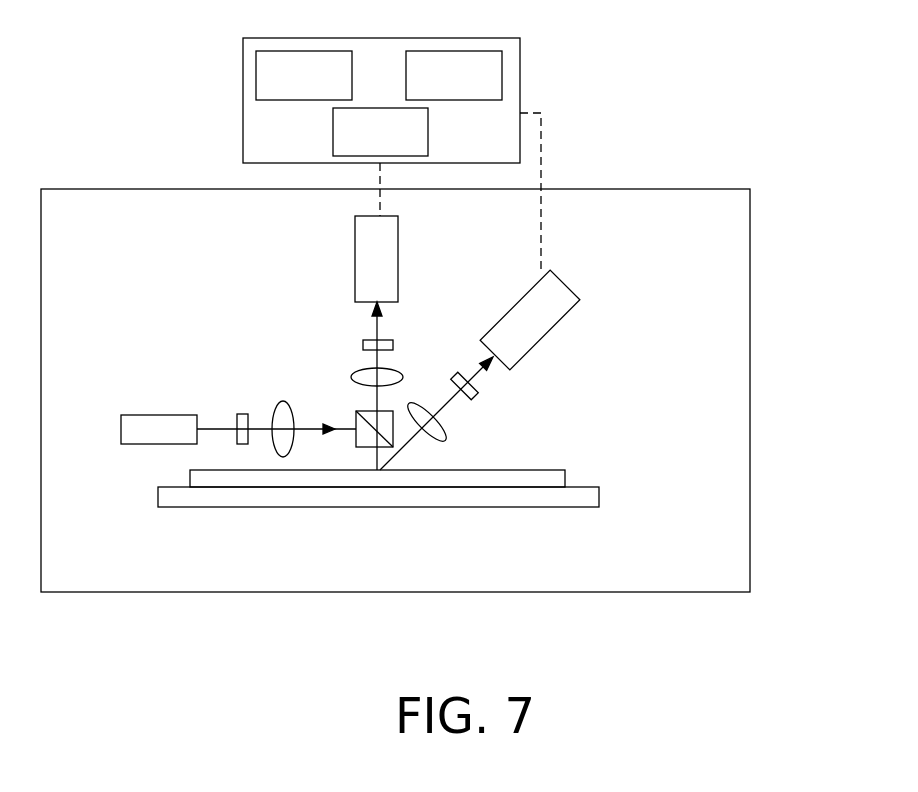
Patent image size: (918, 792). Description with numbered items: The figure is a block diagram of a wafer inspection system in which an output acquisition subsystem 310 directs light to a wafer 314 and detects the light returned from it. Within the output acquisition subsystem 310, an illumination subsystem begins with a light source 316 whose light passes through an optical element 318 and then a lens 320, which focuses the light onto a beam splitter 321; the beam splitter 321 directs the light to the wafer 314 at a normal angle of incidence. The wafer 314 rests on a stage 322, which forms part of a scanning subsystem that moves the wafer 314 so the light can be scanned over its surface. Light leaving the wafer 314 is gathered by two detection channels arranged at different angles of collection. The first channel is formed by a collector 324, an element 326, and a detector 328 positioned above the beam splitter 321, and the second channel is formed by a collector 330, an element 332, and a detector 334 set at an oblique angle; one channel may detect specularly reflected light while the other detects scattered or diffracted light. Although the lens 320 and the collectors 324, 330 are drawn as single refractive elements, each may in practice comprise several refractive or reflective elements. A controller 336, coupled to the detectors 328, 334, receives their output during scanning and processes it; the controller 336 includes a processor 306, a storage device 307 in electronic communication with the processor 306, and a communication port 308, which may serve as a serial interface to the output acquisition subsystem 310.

The processor 306 is at (325, 87).
The storage device 307 is at (475, 87).
The communication port 308 is at (401, 144).
The output acquisition subsystem 310 is at (751, 210).
The wafer 314 is at (190, 472).
The light source 316 is at (132, 415).
The optical element 318 is at (242, 413).
The lens 320 is at (282, 402).
The beam splitter 321 is at (368, 411).
The stage 322 is at (158, 500).
The collector 324 is at (354, 370).
The element 326 is at (363, 343).
The detector 328 is at (356, 262).
The collector 330 is at (445, 437).
The element 332 is at (472, 400).
The detector 334 is at (560, 322).
The controller 336 is at (385, 38).